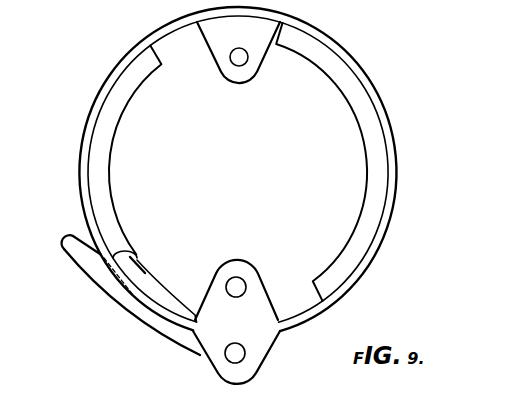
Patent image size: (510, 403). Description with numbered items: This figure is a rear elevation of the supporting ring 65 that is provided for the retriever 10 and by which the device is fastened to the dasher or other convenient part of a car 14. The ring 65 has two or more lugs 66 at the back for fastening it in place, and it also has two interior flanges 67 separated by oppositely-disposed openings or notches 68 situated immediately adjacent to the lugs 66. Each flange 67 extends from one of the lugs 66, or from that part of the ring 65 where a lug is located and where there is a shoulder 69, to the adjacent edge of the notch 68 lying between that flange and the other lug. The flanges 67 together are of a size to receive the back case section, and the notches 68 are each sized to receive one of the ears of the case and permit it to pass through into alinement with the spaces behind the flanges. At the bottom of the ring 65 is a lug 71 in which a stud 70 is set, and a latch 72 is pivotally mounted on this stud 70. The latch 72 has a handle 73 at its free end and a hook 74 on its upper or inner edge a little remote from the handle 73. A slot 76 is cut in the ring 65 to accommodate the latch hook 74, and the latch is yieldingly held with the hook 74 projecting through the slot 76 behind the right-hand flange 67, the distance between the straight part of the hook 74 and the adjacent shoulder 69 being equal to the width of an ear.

The brake assembly 10 is at (98, 23).
The frame 14 is at (167, 400).
The supporting ring 65 is at (398, 173).
The lugs 66 is at (242, 212).
The interior flanges 67 is at (365, 196).
The notches 68 is at (238, 175).
The shoulder 69 is at (281, 52).
The stud 70 is at (241, 356).
The lug 71 is at (240, 374).
The latch 72 is at (117, 302).
The handle 73 is at (71, 246).
The hook 74 is at (136, 258).
The slot 76 is at (105, 257).